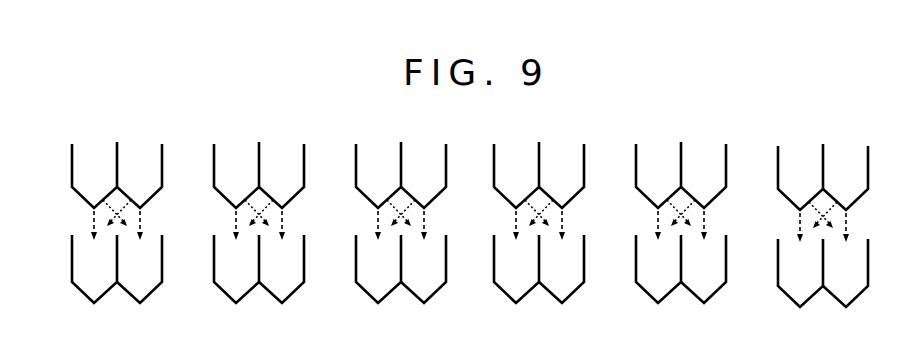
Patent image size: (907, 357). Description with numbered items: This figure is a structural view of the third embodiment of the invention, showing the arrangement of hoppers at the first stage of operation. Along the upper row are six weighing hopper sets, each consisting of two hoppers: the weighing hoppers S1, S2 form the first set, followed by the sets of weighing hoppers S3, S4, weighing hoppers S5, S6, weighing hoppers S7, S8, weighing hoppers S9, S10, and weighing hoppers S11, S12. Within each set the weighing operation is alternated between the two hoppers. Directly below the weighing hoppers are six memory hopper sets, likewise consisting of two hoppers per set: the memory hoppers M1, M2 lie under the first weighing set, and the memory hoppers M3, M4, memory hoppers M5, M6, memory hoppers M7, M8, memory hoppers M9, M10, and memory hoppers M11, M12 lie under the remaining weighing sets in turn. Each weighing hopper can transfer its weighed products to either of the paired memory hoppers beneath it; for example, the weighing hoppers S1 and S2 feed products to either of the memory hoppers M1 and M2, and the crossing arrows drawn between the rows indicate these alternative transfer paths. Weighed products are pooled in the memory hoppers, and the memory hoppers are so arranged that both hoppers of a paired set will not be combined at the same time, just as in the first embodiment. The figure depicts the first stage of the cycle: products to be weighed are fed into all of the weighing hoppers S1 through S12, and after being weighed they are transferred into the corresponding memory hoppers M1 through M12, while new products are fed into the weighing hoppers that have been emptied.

The weighing hopper S1 is at (94, 191).
The weighing hopper S2 is at (139, 192).
The weighing hopper S3 is at (236, 191).
The weighing hopper S4 is at (281, 192).
The weighing hopper S5 is at (378, 191).
The weighing hopper S6 is at (423, 192).
The weighing hopper S7 is at (516, 191).
The weighing hopper S8 is at (561, 192).
The weighing hopper S9 is at (658, 191).
The weighing hopper S10 is at (703, 192).
The weighing hopper S11 is at (800, 193).
The weighing hopper S12 is at (845, 194).
The memory hopper M1 is at (94, 269).
The memory hopper M2 is at (139, 269).
The memory hopper M3 is at (236, 269).
The memory hopper M4 is at (281, 269).
The memory hopper M5 is at (378, 269).
The memory hopper M6 is at (423, 269).
The memory hopper M7 is at (516, 269).
The memory hopper M8 is at (561, 269).
The memory hopper M9 is at (658, 269).
The memory hopper M10 is at (703, 269).
The memory hopper M11 is at (801, 273).
The memory hopper M12 is at (845, 273).